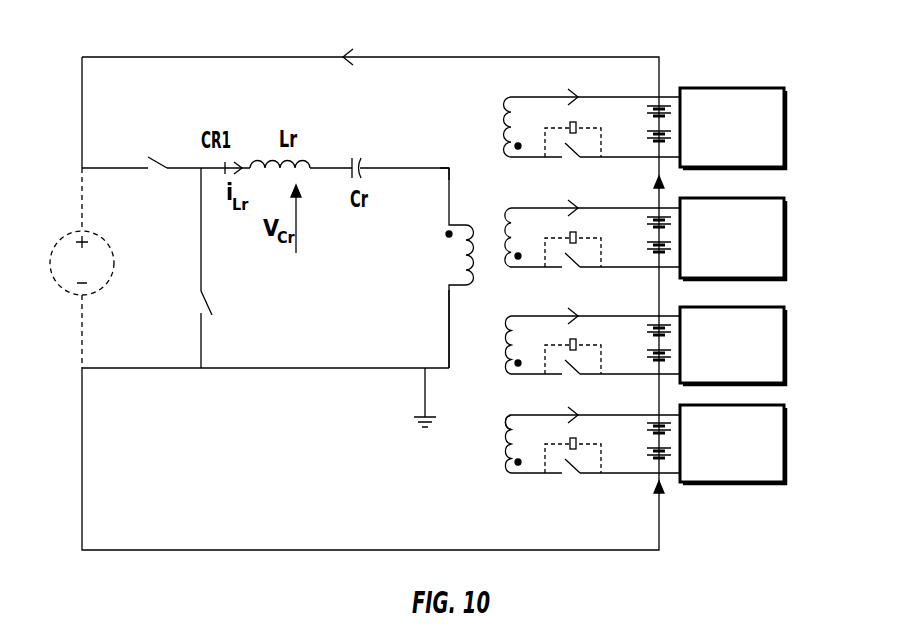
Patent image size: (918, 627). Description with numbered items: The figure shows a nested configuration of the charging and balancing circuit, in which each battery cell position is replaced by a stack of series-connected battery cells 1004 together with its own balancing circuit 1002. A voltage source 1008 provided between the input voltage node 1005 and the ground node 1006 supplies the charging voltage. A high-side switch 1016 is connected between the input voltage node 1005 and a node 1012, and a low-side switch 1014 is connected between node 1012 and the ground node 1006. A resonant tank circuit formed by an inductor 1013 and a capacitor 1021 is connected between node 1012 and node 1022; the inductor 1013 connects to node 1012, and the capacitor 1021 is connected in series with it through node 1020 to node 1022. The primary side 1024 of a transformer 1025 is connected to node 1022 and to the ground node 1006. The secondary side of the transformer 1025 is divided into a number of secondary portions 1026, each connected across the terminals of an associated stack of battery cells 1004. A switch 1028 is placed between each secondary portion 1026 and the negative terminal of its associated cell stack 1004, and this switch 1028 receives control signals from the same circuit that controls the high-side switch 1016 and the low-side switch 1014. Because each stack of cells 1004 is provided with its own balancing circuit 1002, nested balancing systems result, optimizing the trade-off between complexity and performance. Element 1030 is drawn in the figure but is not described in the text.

The balancing circuit 1002 is at (795, 430).
The battery cells 1004 is at (662, 457).
The input voltage node 1005 is at (82, 168).
The ground node 1006 is at (82, 368).
The voltage source 1008 is at (54, 248).
The node 1012 is at (201, 168).
The inductor 1013 is at (308, 163).
The low-side switch 1014 is at (211, 304).
The high-side switch 1016 is at (155, 172).
The node 1020 is at (340, 166).
The capacitor 1021 is at (360, 178).
The node 1022 is at (451, 173).
The primary side 1024 is at (431, 267).
The transformer 1025 is at (461, 444).
The secondary portions 1026 is at (525, 415).
The switch 1028 is at (571, 474).
The fuse 1030 is at (574, 438).